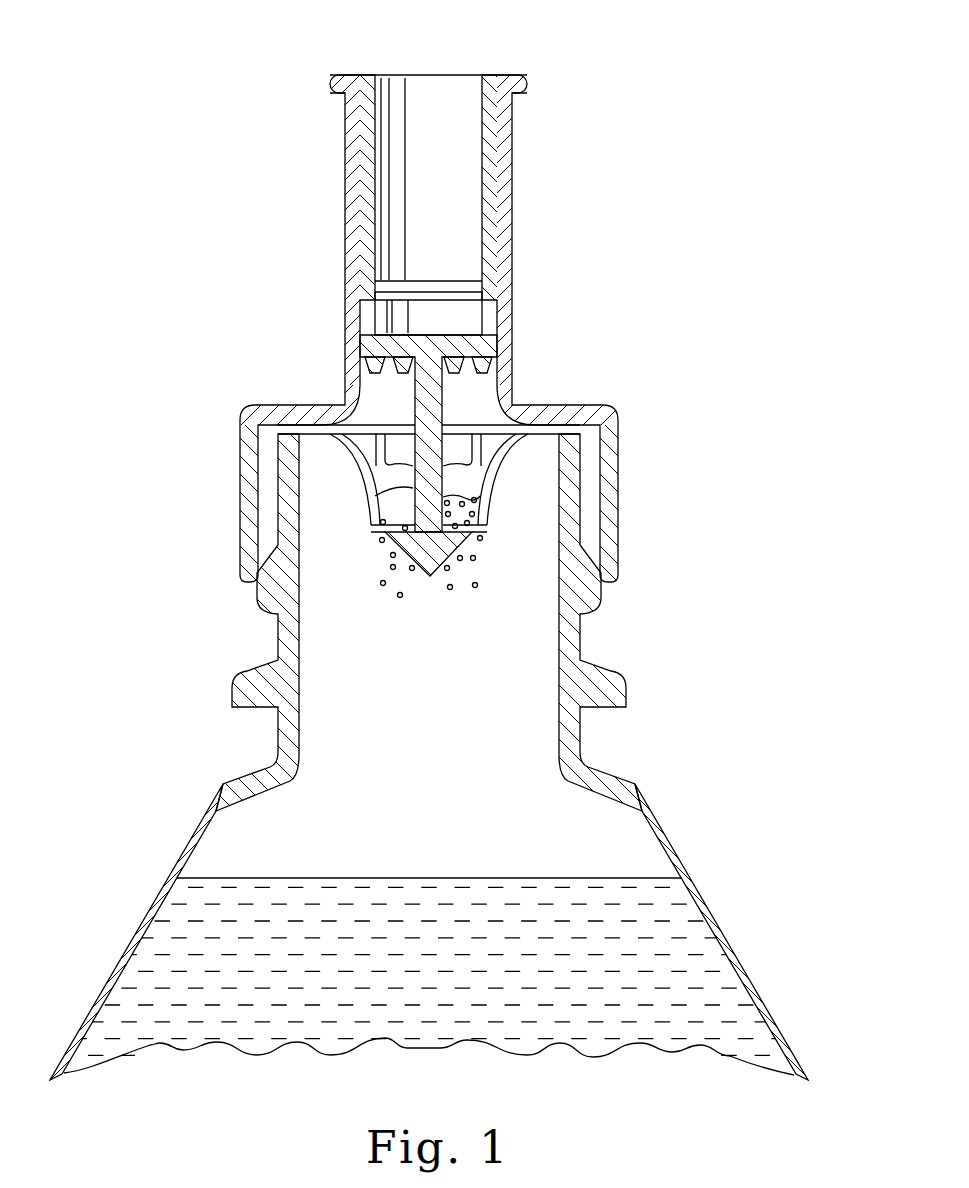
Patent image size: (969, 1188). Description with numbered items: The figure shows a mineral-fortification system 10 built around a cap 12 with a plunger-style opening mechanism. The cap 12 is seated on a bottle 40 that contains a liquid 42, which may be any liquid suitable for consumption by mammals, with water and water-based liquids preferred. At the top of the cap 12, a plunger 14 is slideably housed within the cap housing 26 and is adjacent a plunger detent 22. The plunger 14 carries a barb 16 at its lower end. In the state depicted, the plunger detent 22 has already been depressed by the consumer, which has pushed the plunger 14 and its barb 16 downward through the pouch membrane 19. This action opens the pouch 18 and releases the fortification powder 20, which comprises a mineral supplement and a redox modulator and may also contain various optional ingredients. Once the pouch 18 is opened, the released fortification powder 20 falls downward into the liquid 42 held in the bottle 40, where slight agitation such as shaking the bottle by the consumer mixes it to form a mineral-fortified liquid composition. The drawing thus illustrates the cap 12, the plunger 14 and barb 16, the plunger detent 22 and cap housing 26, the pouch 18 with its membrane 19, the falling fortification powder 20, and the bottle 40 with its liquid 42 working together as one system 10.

The mineral-fortification system 10 is at (710, 205).
The cap 12 is at (660, 503).
The plunger 14 is at (442, 403).
The barb 16 is at (431, 580).
The pouch 18 is at (477, 477).
The pouch membrane 19 is at (363, 487).
The fortification powder 20 is at (486, 492).
The plunger detent 22 is at (499, 77).
The cap housing 26 is at (513, 241).
The bottle 40 is at (675, 850).
The liquid 42 is at (715, 982).